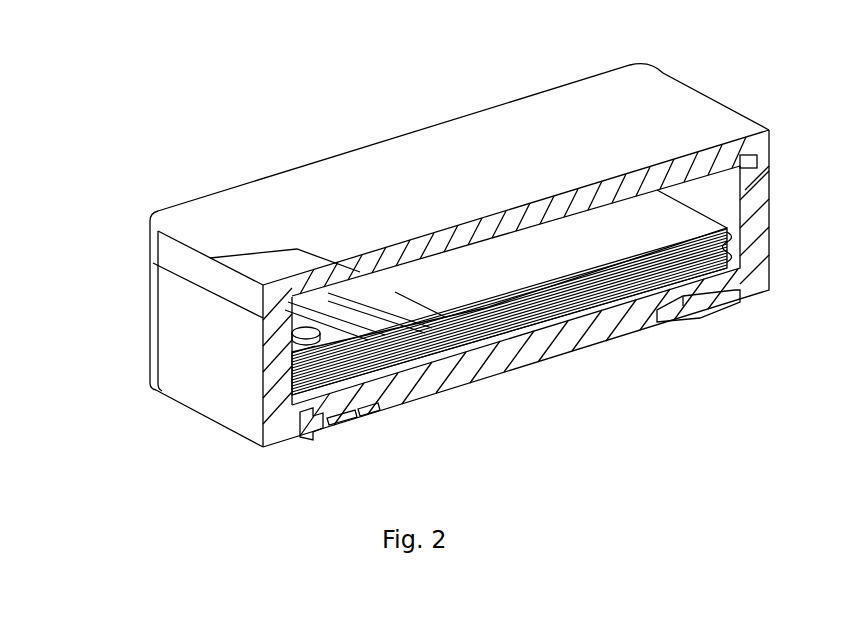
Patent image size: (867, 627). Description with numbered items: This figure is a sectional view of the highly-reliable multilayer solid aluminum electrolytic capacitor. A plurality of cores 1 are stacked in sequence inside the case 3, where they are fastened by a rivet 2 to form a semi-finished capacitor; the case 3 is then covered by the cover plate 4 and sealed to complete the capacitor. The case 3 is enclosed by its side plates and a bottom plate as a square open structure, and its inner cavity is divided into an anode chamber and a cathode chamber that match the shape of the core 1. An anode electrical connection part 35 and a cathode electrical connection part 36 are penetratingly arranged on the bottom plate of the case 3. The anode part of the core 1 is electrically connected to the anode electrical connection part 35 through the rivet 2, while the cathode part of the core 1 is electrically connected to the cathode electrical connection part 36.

The core 1 is at (573, 255).
The rivet 2 is at (301, 333).
The case 3 is at (172, 342).
The cover plate 4 is at (373, 177).
The anode electrical connection part 35 is at (317, 416).
The cathode electrical connection part 36 is at (677, 303).